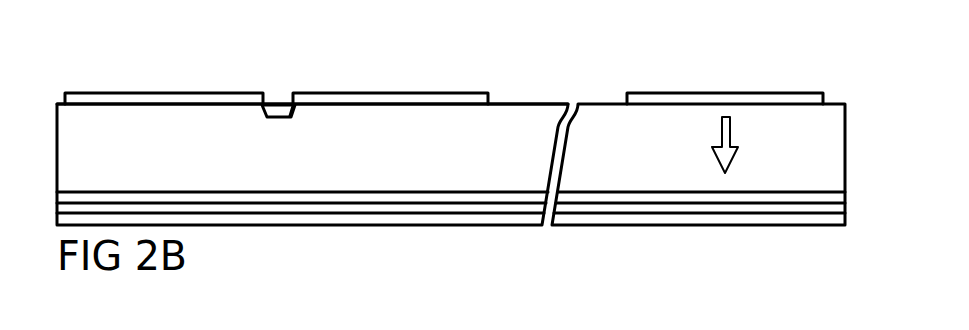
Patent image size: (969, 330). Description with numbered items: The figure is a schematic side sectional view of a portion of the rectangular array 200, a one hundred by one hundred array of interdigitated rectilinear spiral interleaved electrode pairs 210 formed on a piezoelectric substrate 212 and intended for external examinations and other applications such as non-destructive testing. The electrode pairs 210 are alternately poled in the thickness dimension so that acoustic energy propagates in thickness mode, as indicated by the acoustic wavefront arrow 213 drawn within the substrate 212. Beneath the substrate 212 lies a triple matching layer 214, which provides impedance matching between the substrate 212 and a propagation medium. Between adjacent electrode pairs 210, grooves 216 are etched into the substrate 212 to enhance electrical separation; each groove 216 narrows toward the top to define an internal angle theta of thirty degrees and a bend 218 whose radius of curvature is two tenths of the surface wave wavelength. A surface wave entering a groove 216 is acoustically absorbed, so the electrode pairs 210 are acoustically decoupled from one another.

The rectangular array 200 is at (750, 73).
The interdigitated rectilinear spiral interleaved electrode pairs 210 is at (238, 92).
The piezoelectric substrate 212 is at (428, 174).
The acoustic wavefront arrow 213 is at (730, 132).
The triple matching layer 214 is at (848, 211).
The grooves 216 is at (278, 119).
The bend 218 is at (285, 105).